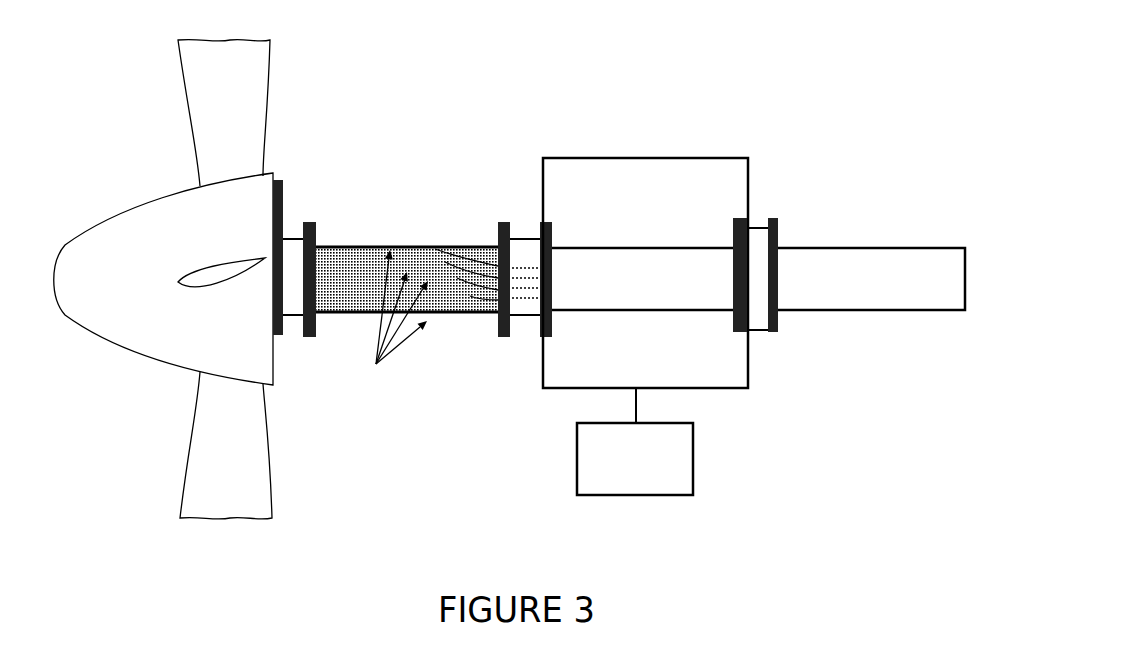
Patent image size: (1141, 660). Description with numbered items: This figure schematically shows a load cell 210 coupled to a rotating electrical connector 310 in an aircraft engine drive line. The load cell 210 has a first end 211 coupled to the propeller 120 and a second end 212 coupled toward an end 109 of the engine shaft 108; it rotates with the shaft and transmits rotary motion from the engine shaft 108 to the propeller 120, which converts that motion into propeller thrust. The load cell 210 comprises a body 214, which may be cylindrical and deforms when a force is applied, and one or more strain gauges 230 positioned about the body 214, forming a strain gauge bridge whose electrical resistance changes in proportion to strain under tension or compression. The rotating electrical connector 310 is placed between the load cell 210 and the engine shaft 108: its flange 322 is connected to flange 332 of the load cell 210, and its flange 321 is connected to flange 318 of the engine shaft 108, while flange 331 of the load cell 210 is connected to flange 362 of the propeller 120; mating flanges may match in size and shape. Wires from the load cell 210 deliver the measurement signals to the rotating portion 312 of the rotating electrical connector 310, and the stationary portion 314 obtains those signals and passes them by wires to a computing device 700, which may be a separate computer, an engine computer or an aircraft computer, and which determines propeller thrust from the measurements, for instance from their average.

The propeller 120 is at (146, 167).
The load cell 210 is at (405, 200).
The flange of the propeller 362 is at (277, 236).
The first end 211 is at (320, 262).
The flange of the load cell 331 is at (300, 338).
The body 214 is at (356, 300).
The second end 212 is at (497, 297).
The strain gauges 230 is at (395, 322).
The flange of the load cell 332 is at (506, 338).
The flange of the rotating electrical connector 322 is at (541, 335).
The rotating electrical connector 310 is at (590, 146).
The rotating portion 312 is at (600, 262).
The stationary portion 314 is at (610, 367).
The flange of the rotating electrical connector 321 is at (738, 331).
The end of the engine shaft 109 is at (780, 282).
The flange of the engine shaft 318 is at (772, 218).
The engine shaft 108 is at (853, 273).
The computing device 700 is at (653, 470).